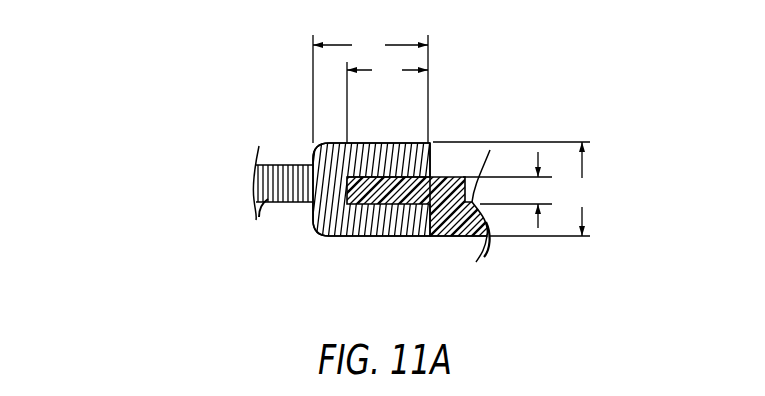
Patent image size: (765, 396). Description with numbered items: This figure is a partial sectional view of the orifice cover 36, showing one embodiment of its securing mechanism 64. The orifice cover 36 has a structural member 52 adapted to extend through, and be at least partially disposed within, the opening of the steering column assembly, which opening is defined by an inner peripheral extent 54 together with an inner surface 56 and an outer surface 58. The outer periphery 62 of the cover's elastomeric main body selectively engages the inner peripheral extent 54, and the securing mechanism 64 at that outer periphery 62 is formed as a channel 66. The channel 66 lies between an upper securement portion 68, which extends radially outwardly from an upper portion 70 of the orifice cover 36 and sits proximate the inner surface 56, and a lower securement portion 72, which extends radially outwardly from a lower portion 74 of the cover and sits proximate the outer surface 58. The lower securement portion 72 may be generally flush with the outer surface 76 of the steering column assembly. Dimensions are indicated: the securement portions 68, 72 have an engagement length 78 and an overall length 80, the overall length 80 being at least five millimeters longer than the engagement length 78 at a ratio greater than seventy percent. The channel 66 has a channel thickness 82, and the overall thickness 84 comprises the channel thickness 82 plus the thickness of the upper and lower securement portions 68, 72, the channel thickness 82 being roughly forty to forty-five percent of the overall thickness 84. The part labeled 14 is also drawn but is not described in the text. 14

The insert pin 14 is at (484, 175).
The orifice cover 36 is at (279, 160).
The structural member 52 is at (273, 217).
The inner peripheral extent 54 is at (317, 232).
The inner surface 56 is at (430, 141).
The outer surface 58 is at (403, 238).
The outer periphery 62 is at (369, 142).
The securing mechanism 64 is at (433, 142).
The channel 66 is at (363, 238).
The upper securement portion 68 is at (348, 142).
The upper portion 70 is at (313, 160).
The lower securement portion 72 is at (418, 238).
The lower portion 74 is at (345, 239).
The outer surface of the steering column assembly 76 is at (467, 238).
The engagement length 78 is at (387, 100).
The overall length 80 is at (370, 87).
The channel thickness 82 is at (507, 190).
The overall thickness 84 is at (512, 189).